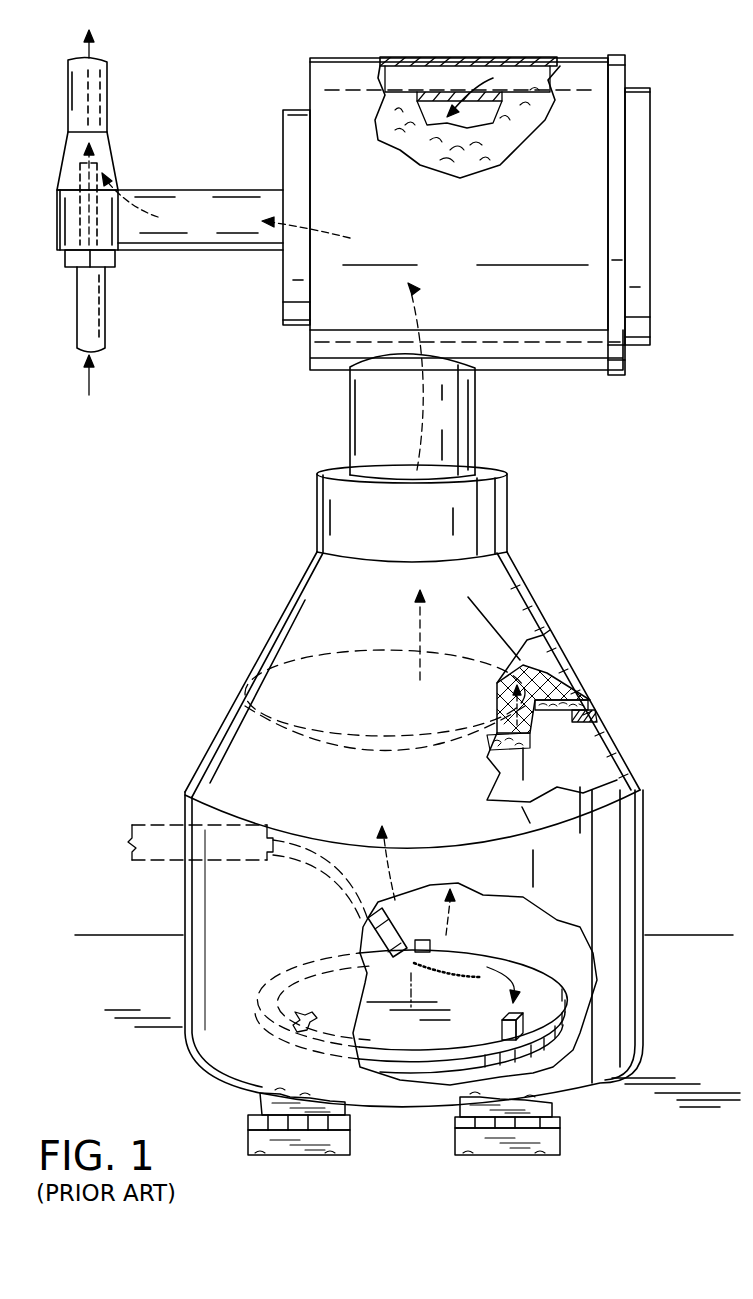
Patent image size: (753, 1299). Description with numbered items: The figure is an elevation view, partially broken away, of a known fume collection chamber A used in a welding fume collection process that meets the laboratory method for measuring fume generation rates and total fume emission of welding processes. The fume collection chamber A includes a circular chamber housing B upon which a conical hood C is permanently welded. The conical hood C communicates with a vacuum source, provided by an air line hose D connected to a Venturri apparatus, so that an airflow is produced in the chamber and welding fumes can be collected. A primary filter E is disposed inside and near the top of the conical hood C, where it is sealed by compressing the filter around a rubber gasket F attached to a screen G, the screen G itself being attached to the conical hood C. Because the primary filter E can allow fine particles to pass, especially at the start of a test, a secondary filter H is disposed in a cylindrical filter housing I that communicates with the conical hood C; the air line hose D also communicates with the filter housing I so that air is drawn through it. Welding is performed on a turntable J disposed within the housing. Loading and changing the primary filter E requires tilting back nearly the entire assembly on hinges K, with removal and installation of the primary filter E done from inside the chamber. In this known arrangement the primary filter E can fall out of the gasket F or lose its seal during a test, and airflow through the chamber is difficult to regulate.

The fume collection chamber A is at (620, 608).
The circular chamber housing B is at (645, 858).
The conical hood C is at (278, 620).
The air line hose D is at (82, 317).
The primary filter E is at (585, 700).
The rubber gasket F is at (592, 714).
The screen G is at (565, 677).
The secondary filter H is at (517, 105).
The cylindrical filter housing I is at (345, 67).
The turntable J is at (567, 1000).
The hinges K is at (250, 1121).